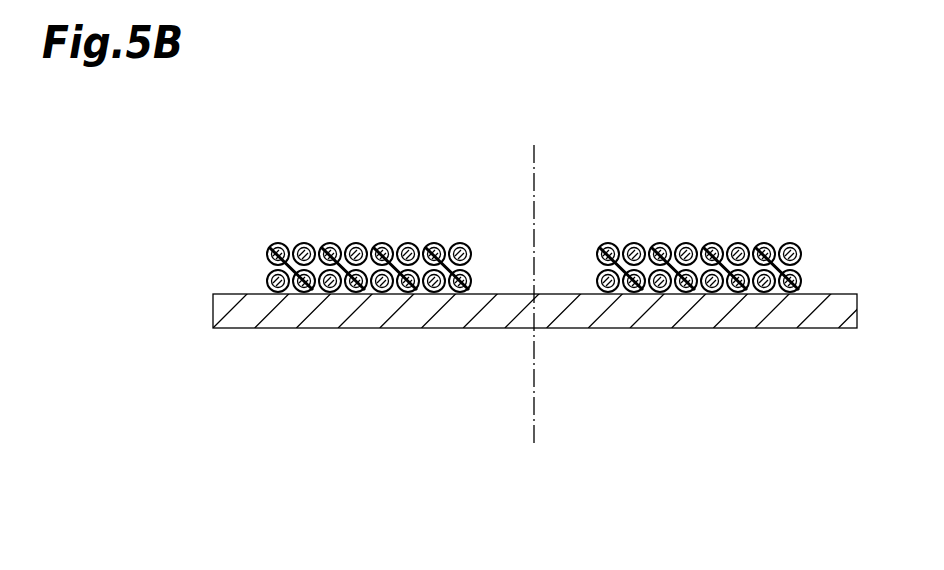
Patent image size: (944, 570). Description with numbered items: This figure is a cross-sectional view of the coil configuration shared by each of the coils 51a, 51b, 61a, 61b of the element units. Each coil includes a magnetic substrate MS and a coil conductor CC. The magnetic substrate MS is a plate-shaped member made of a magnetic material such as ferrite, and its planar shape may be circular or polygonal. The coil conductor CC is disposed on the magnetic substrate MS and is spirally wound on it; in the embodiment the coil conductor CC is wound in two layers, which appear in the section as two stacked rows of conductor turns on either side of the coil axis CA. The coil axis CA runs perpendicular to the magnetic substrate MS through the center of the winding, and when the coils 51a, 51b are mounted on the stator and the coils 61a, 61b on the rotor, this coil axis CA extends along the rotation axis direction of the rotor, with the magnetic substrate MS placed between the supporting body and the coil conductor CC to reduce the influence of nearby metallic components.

The coil 51a is at (534, 168).
The coil 51b is at (534, 168).
The coil 61a is at (534, 168).
The coil 61b is at (601, 165).
The coil conductor CC is at (358, 240).
The magnetic substrate MS is at (280, 313).
The coil axis CA is at (534, 404).